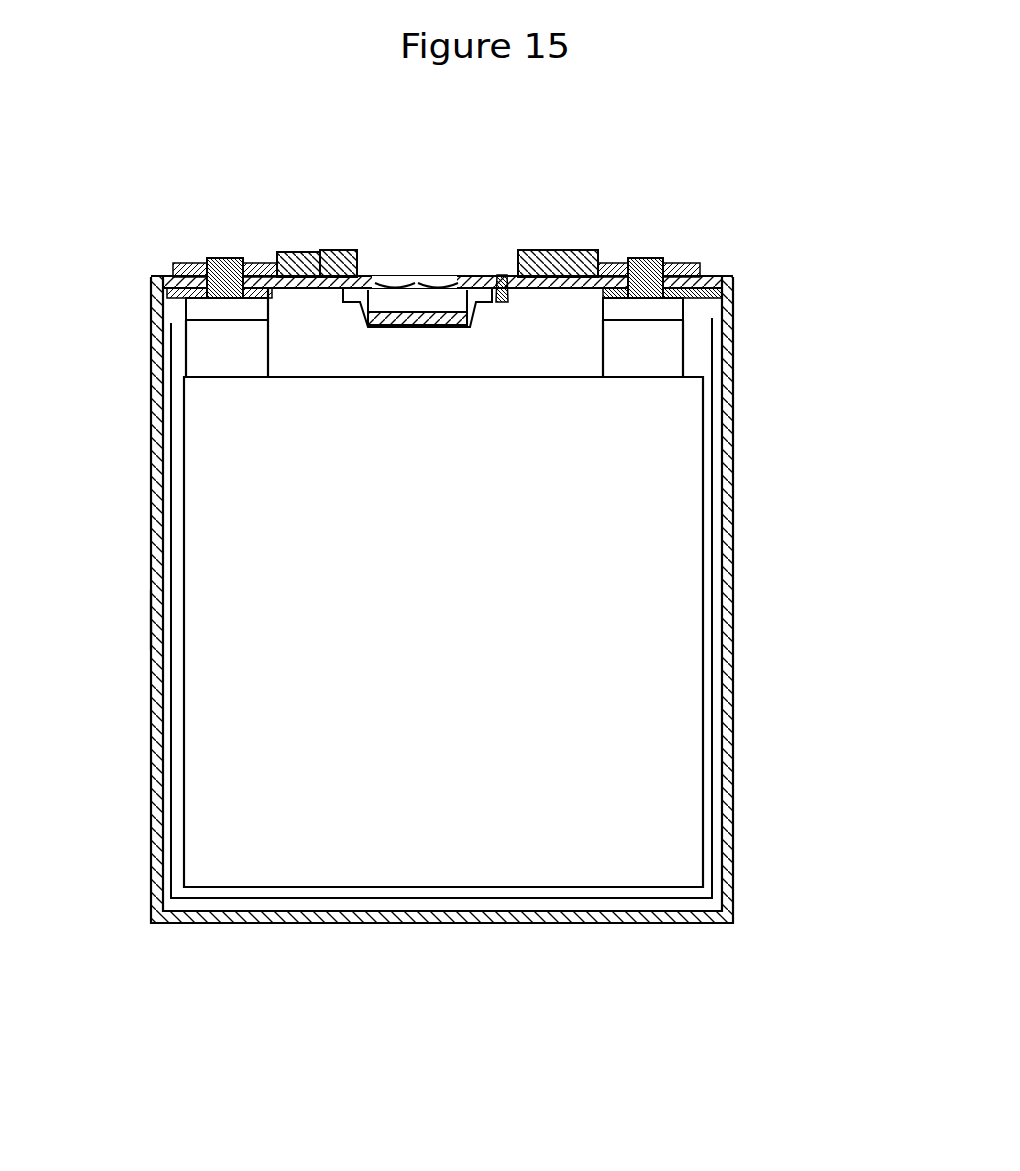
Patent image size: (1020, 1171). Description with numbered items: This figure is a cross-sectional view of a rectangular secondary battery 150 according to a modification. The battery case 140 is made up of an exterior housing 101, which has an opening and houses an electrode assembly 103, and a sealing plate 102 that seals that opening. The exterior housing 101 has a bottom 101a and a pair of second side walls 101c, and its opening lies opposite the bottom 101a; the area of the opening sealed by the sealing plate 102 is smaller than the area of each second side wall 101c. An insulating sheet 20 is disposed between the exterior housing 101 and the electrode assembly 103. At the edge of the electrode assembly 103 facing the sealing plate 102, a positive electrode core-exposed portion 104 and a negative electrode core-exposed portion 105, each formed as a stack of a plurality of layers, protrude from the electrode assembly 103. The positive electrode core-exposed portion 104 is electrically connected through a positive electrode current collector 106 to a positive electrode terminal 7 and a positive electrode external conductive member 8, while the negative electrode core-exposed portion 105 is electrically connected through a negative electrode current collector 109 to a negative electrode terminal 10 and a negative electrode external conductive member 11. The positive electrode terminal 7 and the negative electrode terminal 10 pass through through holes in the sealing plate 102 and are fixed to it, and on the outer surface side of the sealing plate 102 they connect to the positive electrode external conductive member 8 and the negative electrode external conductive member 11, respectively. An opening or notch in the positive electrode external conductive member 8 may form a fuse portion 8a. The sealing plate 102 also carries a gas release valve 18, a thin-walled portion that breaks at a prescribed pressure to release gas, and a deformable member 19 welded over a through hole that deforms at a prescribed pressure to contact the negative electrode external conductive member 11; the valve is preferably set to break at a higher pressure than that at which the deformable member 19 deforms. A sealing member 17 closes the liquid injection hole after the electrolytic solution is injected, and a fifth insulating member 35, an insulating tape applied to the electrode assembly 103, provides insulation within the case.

The rectangular secondary battery 150 is at (230, 127).
The battery case 140 is at (838, 189).
The exterior housing 101 is at (733, 490).
The bottom 101a is at (613, 917).
The second side wall 101c is at (150, 622).
The sealing plate 102 is at (710, 273).
The electrode assembly 103 is at (407, 783).
The positive electrode core-exposed portion 104 is at (675, 362).
The negative electrode core-exposed portion 105 is at (220, 360).
The positive electrode current collector 106 is at (678, 313).
The negative electrode current collector 109 is at (207, 317).
The insulating sheet 20 is at (166, 768).
The negative electrode terminal 10 is at (226, 258).
The negative electrode external conductive member 11 is at (283, 258).
The deformable member 19 is at (322, 258).
The gas release valve 18 is at (399, 275).
The fifth insulating member 35 is at (440, 322).
The sealing member 17 is at (500, 275).
The positive electrode external conductive member 8 is at (558, 253).
The fuse portion 8a is at (607, 263).
The positive electrode terminal 7 is at (655, 258).